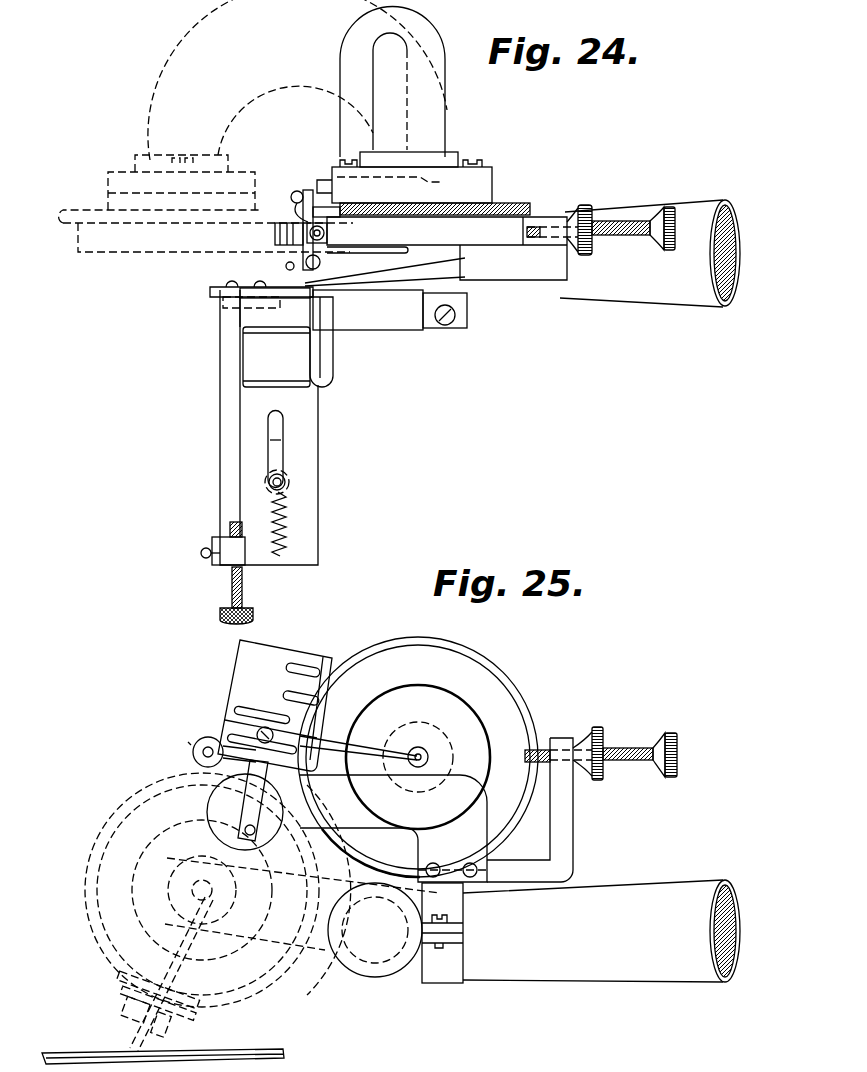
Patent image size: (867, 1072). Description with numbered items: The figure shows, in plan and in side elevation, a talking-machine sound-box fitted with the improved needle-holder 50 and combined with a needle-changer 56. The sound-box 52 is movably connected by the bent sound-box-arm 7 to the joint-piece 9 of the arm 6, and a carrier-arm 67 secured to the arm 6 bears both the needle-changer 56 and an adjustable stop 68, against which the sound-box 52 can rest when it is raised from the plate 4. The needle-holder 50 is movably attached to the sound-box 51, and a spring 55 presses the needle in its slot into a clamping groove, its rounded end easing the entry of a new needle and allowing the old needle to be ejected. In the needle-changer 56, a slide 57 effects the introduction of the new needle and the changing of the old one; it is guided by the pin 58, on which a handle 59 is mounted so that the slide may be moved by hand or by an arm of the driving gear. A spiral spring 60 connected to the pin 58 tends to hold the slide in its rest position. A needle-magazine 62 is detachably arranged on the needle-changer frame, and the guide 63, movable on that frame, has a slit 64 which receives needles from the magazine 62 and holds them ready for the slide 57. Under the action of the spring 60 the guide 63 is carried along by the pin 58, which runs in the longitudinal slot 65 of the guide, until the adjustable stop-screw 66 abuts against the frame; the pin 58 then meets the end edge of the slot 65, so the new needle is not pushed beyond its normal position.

In FIG. 25, the plate 4 is at (238, 1052).
In FIG. 24, the arm 6 is at (650, 253).
In FIG. 25, the arm 6 is at (601, 931).
In FIG. 24, the bent sound-box-arm 7 is at (285, 76).
In FIG. 25, the bent sound-box-arm 7 is at (358, 873).
In FIG. 24, the joint-piece 9 is at (368, 310).
In FIG. 25, the joint-piece 9 is at (395, 933).
In FIG. 24, the needle-holder 50 is at (300, 246).
In FIG. 24, the sound-box 51 is at (301, 207).
In FIG. 24, the sound-box 52 is at (507, 222).
In FIG. 25, the sound-box 52 is at (522, 716).
In FIG. 24, the spring 55 is at (285, 246).
In FIG. 24, the needle-changer 56 is at (362, 292).
In FIG. 25, the needle-changer 56 is at (183, 810).
In FIG. 24, the slide 57 is at (280, 442).
In FIG. 25, the slide 57 is at (358, 758).
In FIG. 25, the pin 58 is at (248, 766).
In FIG. 24, the handle 59 is at (268, 483).
In FIG. 25, the handle 59 is at (248, 835).
In FIG. 24, the spiral spring 60 is at (292, 517).
In FIG. 25, the spiral spring 60 is at (257, 734).
In FIG. 24, the needle-magazine 62 is at (315, 392).
In FIG. 25, the needle-magazine 62 is at (318, 661).
In FIG. 24, the guide 63 is at (300, 466).
In FIG. 25, the guide 63 is at (300, 736).
In FIG. 24, the slit 64 is at (258, 327).
In FIG. 24, the longitudinal slot 65 is at (268, 432).
In FIG. 24, the adjustable stop-screw 66 is at (244, 594).
In FIG. 25, the adjustable stop-screw 66 is at (193, 753).
In FIG. 24, the carrier-arm 67 is at (456, 313).
In FIG. 24, the adjustable stop 68 is at (670, 206).
In FIG. 25, the adjustable stop 68 is at (678, 757).